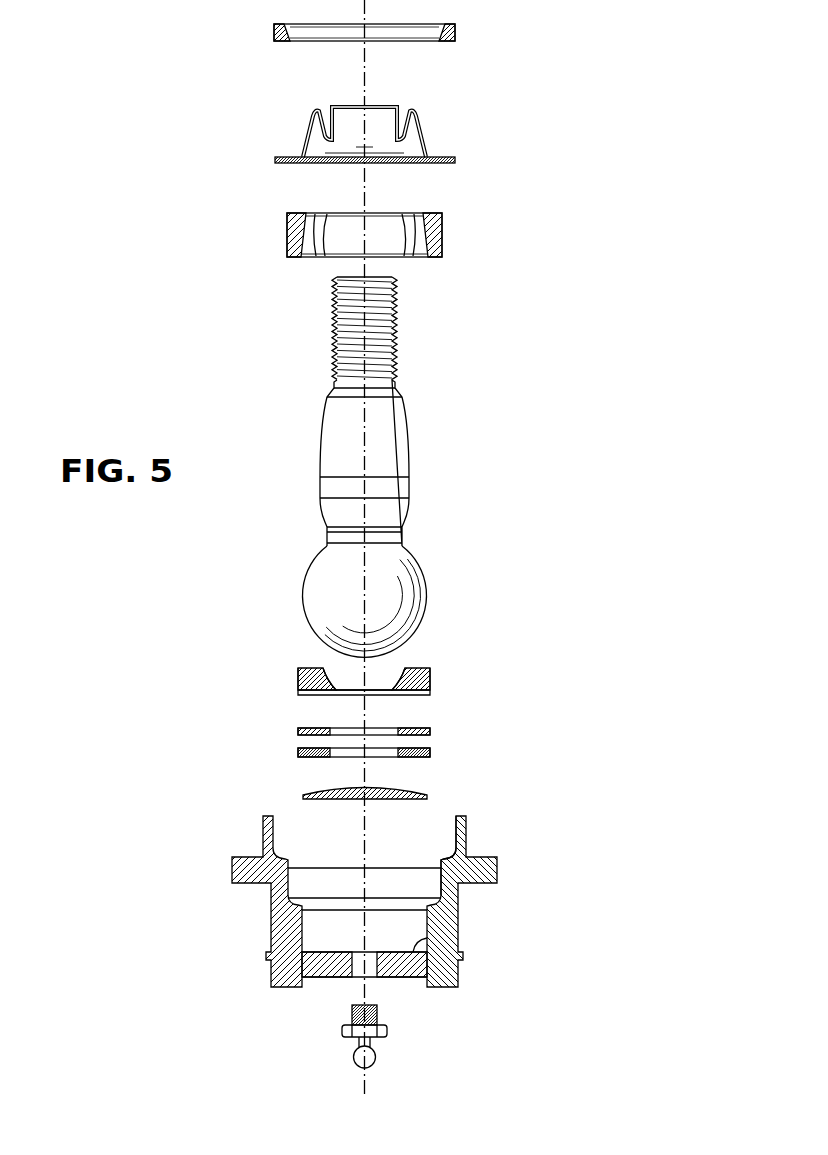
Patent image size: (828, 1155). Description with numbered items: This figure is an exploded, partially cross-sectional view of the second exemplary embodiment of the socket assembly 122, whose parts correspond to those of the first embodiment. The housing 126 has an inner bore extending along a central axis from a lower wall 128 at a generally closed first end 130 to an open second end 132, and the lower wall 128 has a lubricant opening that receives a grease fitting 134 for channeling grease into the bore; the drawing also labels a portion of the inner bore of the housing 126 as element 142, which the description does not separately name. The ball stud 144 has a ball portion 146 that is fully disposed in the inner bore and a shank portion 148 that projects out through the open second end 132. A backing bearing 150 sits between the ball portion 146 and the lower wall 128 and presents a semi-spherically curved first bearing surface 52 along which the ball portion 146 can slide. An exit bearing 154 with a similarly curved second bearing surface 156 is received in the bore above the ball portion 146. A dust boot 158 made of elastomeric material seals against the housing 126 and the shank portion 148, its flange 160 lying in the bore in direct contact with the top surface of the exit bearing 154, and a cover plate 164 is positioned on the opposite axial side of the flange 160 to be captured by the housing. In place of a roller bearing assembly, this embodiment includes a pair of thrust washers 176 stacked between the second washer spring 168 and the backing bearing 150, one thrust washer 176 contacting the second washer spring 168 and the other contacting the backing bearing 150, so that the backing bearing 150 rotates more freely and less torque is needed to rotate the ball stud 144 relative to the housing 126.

The socket assembly 122 is at (580, 441).
The housing 126 is at (348, 915).
The lower wall 128 is at (327, 980).
The first end 130 is at (428, 938).
The second end 132 is at (433, 816).
The grease fitting 134 is at (372, 1050).
The inner wall of housing 142 is at (452, 848).
The ball stud 144 is at (381, 467).
The ball portion 146 is at (379, 600).
The shank portion 148 is at (340, 445).
The backing bearing 150 is at (365, 680).
The first bearing surface 52 is at (323, 667).
The exit bearing 154 is at (323, 267).
The second bearing surface 156 is at (310, 237).
The dust boot 158 is at (418, 127).
The flange 160 is at (290, 160).
The cover plate 164 is at (455, 36).
The second washer spring 168 is at (310, 790).
The thrust washers 176 is at (430, 731).